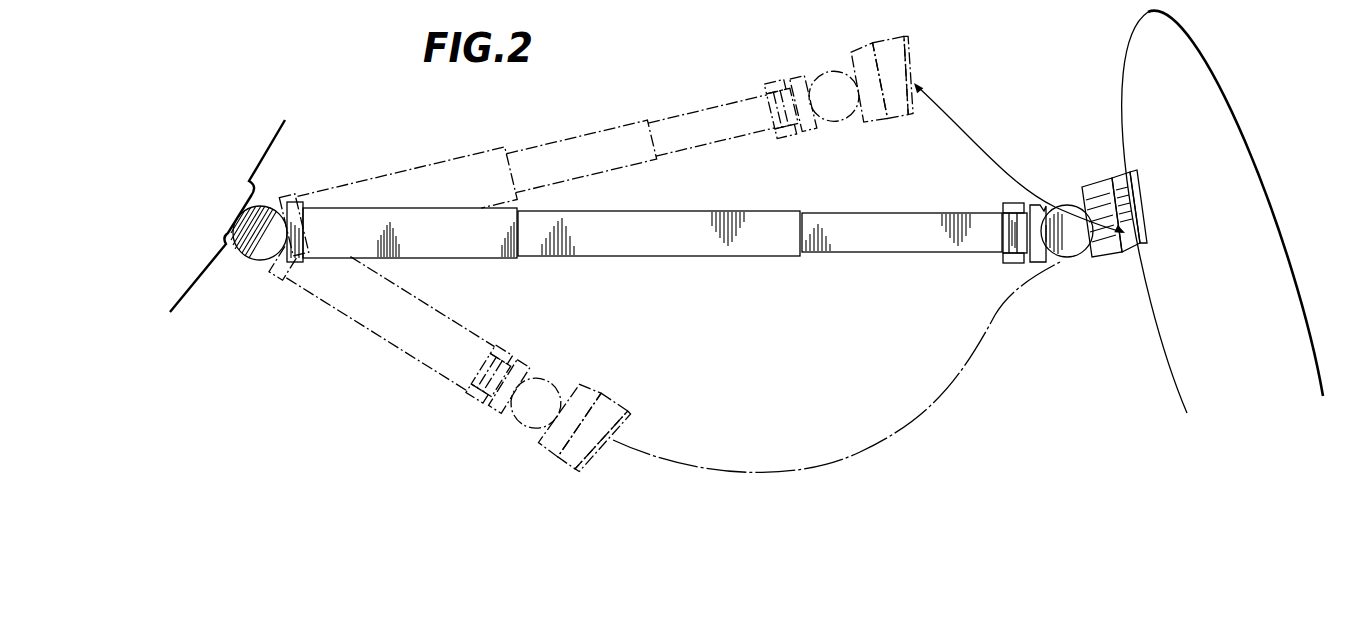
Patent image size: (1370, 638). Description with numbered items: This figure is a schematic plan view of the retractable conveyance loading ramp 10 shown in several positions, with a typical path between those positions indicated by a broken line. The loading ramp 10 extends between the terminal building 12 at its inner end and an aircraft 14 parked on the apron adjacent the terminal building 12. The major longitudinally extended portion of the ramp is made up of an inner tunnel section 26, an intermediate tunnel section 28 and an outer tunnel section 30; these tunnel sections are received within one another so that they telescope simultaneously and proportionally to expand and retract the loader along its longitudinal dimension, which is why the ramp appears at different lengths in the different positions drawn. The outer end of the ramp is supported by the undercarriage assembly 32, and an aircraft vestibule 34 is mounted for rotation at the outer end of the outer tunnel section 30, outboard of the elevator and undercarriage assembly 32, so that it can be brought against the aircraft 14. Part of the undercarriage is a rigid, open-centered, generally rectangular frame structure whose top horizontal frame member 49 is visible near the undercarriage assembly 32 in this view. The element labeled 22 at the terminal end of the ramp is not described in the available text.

The retractable conveyance loading ramp 10 is at (689, 221).
The terminal building 12 is at (282, 141).
The aircraft 14 is at (1216, 96).
The ball joint 22 is at (266, 210).
The inner tunnel section 26 is at (425, 218).
The intermediate tunnel section 28 is at (696, 219).
The outer tunnel section 30 is at (887, 222).
The undercarriage assembly 32 is at (991, 236).
The aircraft vestibule 34 is at (1108, 183).
The top horizontal frame member 49 is at (1009, 228).